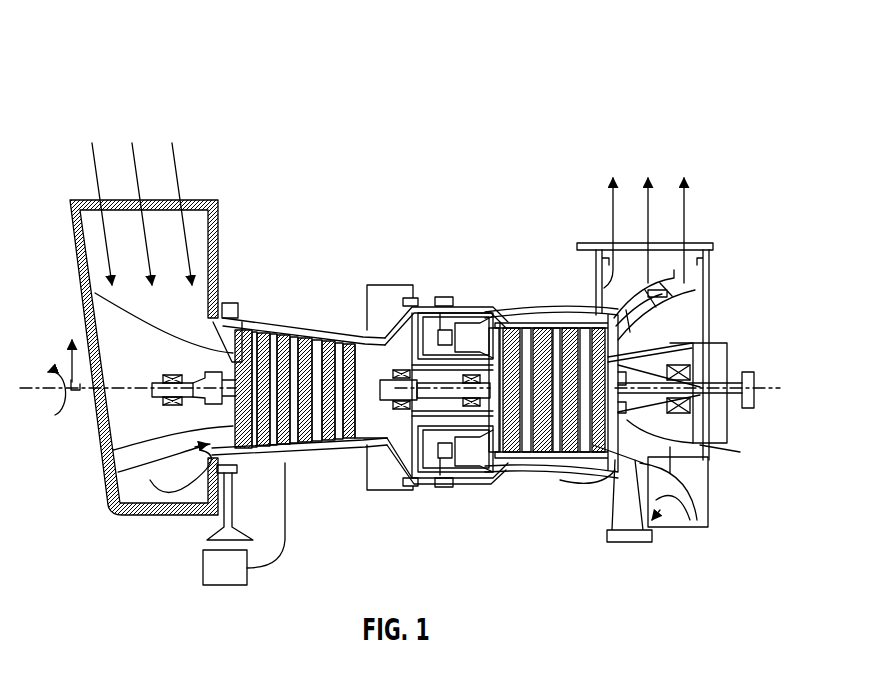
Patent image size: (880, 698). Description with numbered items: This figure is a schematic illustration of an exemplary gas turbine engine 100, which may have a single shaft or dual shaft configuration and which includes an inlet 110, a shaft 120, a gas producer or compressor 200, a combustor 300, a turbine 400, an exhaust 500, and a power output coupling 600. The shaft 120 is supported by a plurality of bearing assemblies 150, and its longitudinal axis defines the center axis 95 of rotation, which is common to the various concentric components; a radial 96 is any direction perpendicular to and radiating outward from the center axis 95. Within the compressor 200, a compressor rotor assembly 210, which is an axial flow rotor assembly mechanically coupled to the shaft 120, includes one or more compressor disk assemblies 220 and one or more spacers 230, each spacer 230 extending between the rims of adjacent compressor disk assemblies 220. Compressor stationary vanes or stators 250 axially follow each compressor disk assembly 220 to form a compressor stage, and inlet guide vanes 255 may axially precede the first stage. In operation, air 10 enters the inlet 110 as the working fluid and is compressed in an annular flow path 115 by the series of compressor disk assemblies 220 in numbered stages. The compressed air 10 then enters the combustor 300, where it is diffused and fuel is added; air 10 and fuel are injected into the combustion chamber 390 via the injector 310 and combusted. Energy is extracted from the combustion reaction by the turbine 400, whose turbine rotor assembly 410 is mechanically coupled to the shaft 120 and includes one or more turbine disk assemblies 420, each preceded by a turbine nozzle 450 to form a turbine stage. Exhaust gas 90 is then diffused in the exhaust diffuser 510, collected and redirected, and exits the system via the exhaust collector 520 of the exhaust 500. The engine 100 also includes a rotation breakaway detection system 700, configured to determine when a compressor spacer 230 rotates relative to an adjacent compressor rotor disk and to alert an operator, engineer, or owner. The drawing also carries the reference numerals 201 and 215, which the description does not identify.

The gas turbine engine 100 is at (97, 36).
The air 10 is at (95, 173).
The exhaust gas 90 is at (604, 207).
The center axis 95 is at (50, 402).
The radial 96 is at (68, 358).
The inlet 110 is at (62, 120).
The annular flow path 115 is at (200, 328).
The shaft 120 is at (165, 378).
The bearing assemblies 150 is at (375, 285).
The compressor 200 is at (395, 120).
The compressor casing 201 is at (362, 450).
The compressor rotor assembly 210 is at (295, 475).
The inner flow passage 215 is at (112, 451).
The compressor disk assemblies 220 is at (275, 452).
The spacers 230 is at (287, 393).
The compressor stationary vanes (stators) 250 is at (289, 335).
The inlet guide vanes 255 is at (236, 318).
The combustor 300 is at (490, 120).
The injectors 310 is at (443, 297).
The combustion chambers 390 is at (470, 323).
The turbine 400 is at (605, 120).
The turbine rotor assembly 410 is at (548, 482).
The turbine disk assemblies 420 is at (590, 465).
The turbine nozzles 450 is at (583, 323).
The exhaust 500 is at (572, 140).
The exhaust diffuser 510 is at (628, 308).
The exhaust collector 520 is at (695, 280).
The power output coupling 600 is at (752, 372).
The rotation breakaway detection system 700 is at (225, 589).